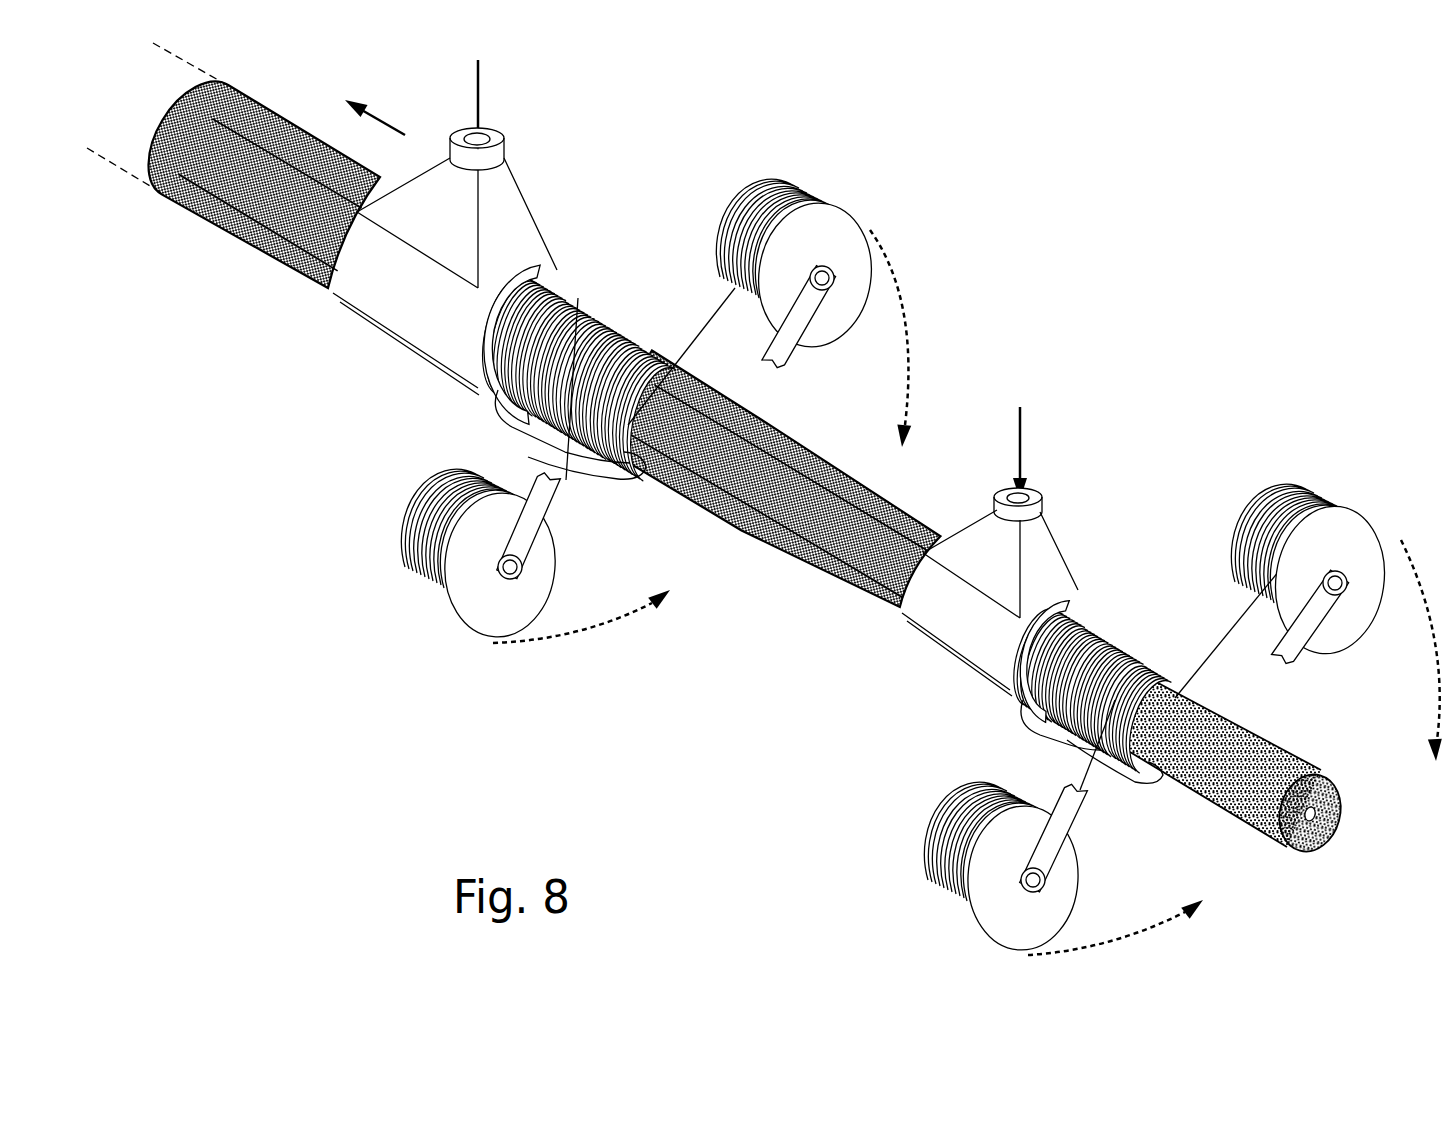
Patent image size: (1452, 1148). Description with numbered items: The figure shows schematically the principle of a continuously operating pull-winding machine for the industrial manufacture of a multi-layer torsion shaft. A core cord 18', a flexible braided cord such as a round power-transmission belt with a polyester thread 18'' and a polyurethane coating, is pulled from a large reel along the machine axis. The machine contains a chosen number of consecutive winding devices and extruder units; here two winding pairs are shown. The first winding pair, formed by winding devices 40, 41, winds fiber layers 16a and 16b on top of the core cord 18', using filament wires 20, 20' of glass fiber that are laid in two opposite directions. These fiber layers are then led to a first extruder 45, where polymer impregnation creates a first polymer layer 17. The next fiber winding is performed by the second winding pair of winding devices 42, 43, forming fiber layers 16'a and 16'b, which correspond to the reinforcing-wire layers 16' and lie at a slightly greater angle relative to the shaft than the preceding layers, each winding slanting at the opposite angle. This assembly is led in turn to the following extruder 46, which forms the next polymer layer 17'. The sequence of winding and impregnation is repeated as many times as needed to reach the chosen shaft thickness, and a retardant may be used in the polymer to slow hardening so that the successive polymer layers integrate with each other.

The outer elastic polymer layer 17' is at (239, 215).
The first polymer layer 17 is at (771, 481).
The fiber layer 16'b is at (594, 307).
The fiber layer 16'a is at (640, 339).
The fiber layer 16b is at (1118, 610).
The fiber layer 16a is at (1176, 645).
The reinforcing-wire layers 16' is at (780, 586).
The extruder 46 is at (523, 107).
The extruder 45 is at (1094, 482).
The winding device 43 is at (838, 160).
The winding device 42 is at (370, 648).
The winding device 41 is at (1333, 433).
The winding device 40 is at (898, 868).
The filament wire 20 is at (1232, 646).
The filament wire 20' is at (1130, 788).
The core cord 18' is at (1230, 812).
The polyester thread 18'' is at (1343, 792).